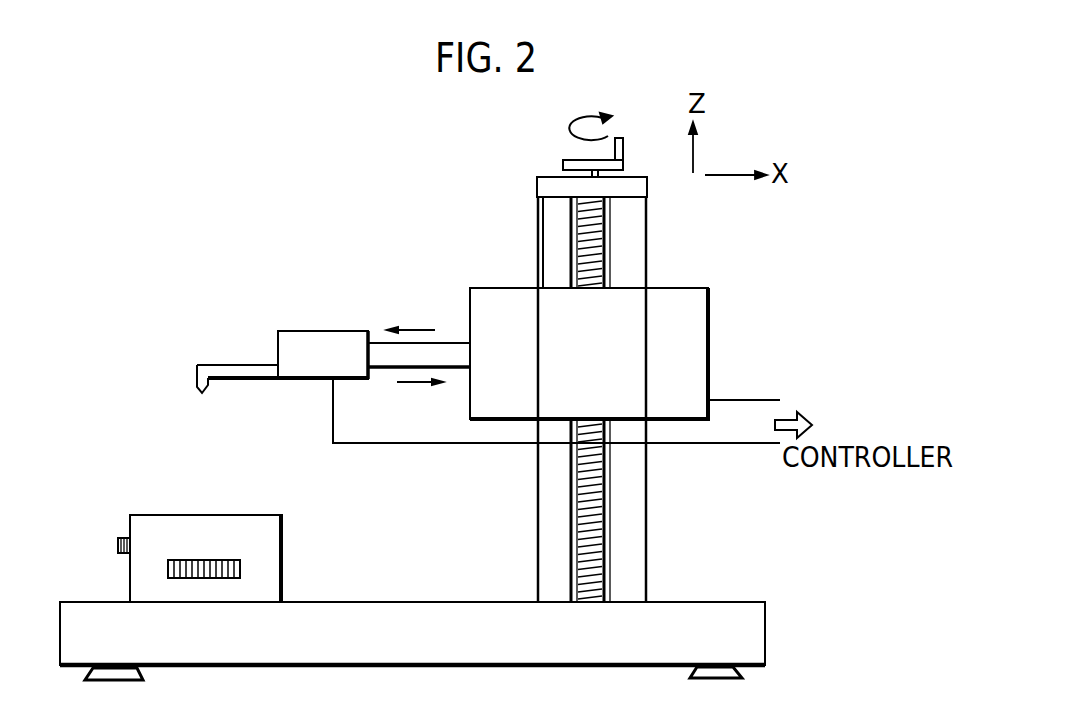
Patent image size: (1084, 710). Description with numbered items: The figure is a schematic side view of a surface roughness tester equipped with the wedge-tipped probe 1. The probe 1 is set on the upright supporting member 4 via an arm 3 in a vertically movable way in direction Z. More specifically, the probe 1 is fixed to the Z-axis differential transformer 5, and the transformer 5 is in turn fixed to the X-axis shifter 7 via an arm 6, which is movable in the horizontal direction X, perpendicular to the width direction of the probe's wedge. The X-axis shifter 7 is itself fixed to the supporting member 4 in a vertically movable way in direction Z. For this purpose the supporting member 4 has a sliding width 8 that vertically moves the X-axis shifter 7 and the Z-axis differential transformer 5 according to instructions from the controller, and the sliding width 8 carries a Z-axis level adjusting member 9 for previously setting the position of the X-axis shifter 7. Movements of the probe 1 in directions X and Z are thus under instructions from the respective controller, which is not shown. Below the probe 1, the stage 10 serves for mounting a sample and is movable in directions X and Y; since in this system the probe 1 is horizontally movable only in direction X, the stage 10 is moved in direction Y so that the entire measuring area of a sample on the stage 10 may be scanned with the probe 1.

The probe 1 is at (184, 362).
The arm 3 is at (245, 365).
The upright supporting member 4 is at (632, 275).
The Z-axis differential transformer 5 is at (317, 330).
The arm 6 is at (507, 307).
The X-axis shifter 7 is at (688, 345).
The sliding width 8 is at (605, 243).
The Z-axis level adjusting member 9 is at (556, 146).
The stage 10 is at (265, 540).